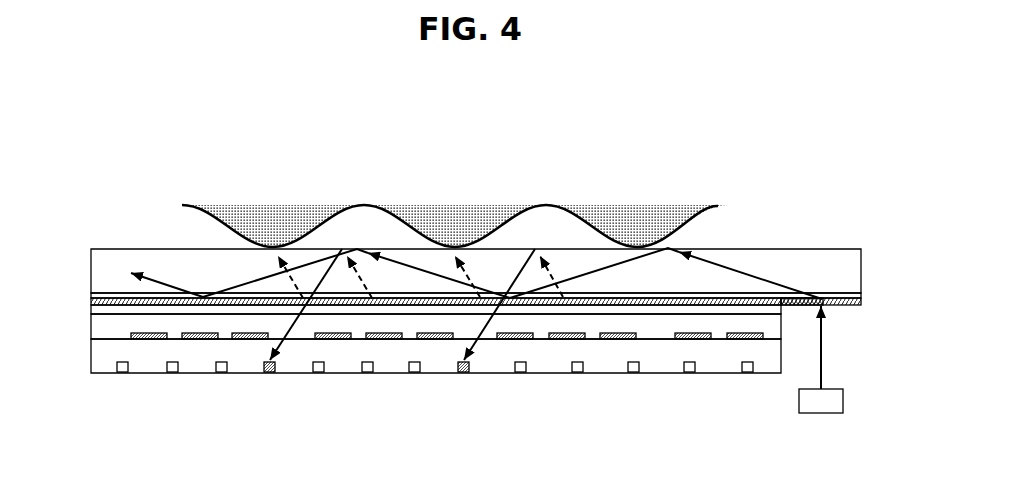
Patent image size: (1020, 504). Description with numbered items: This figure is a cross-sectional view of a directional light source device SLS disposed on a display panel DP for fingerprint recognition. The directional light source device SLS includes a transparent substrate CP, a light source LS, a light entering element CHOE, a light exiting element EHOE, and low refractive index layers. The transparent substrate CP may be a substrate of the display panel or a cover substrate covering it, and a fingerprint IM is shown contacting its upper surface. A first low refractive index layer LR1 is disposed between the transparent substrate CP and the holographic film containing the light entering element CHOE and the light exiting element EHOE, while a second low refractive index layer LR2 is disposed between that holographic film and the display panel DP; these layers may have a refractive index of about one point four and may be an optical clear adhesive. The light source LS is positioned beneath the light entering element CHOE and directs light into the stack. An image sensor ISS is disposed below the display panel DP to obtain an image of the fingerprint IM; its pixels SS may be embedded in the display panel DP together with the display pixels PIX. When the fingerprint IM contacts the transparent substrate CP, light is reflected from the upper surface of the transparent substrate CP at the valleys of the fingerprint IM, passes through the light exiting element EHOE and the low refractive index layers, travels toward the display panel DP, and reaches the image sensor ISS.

The fingerprint IM is at (218, 225).
The directional light source device SLS is at (507, 221).
The transparent substrate CP is at (720, 258).
The light exiting element EHOE is at (748, 302).
The second low refractive index layer LR2 is at (458, 240).
The first low refractive index layer LR1 is at (827, 294).
The light entering element CHOE is at (843, 297).
The display panel DP is at (407, 373).
The image sensor ISS is at (403, 386).
The display pixels PIX is at (151, 338).
The pixels of the image sensor SS is at (269, 364).
The light source LS is at (822, 403).